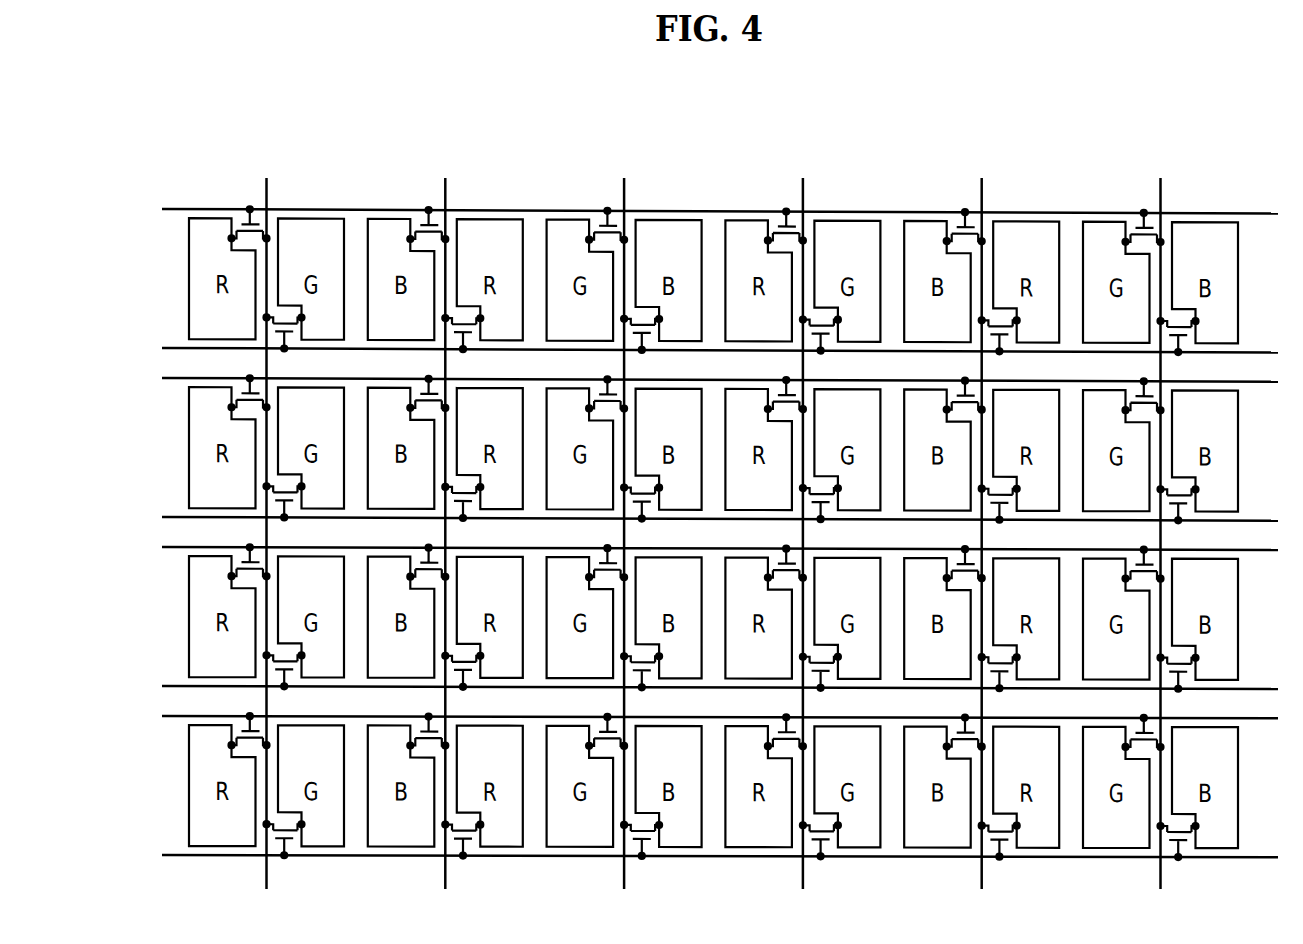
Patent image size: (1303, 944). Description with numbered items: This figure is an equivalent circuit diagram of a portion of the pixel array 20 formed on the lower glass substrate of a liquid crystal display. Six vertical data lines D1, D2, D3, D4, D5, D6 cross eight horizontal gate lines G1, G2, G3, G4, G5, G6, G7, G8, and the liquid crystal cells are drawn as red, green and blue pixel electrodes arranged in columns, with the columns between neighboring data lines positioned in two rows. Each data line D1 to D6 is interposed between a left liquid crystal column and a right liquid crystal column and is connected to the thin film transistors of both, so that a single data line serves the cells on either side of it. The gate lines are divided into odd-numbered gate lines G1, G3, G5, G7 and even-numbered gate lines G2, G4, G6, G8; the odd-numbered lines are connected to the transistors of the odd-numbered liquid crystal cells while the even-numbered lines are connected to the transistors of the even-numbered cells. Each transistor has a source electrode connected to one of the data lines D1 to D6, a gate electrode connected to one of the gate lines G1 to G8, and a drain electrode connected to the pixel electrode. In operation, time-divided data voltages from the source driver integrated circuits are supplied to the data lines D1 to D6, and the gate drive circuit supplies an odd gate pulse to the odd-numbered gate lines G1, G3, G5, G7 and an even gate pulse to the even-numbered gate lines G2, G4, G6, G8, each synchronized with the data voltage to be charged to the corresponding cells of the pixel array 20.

The pixel array 20 is at (182, 136).
The data line D1 is at (266, 521).
The data line D2 is at (445, 521).
The data line D3 is at (624, 521).
The data line D4 is at (802, 521).
The data line D5 is at (981, 521).
The data line D6 is at (1160, 521).
The odd-numbered gate line G1 is at (707, 211).
The even-numbered gate line G2 is at (707, 350).
The odd-numbered gate line G3 is at (707, 380).
The even-numbered gate line G4 is at (707, 519).
The odd-numbered gate line G5 is at (707, 548).
The even-numbered gate line G6 is at (707, 687).
The odd-numbered gate line G7 is at (707, 717).
The even-numbered gate line G8 is at (707, 856).